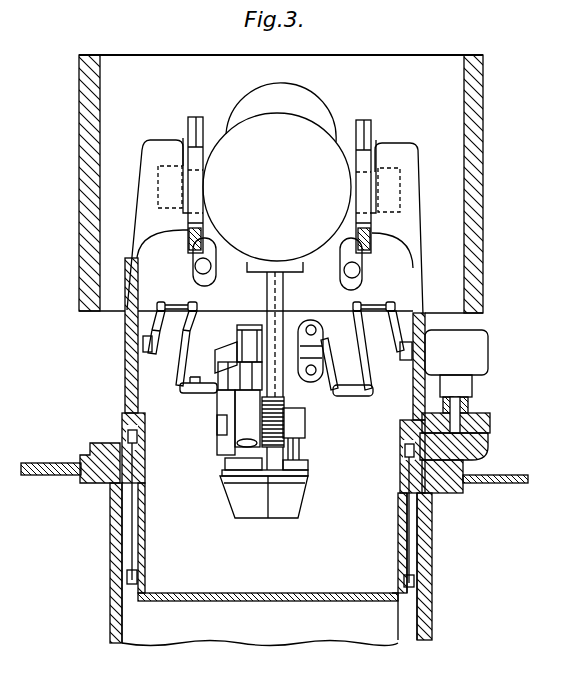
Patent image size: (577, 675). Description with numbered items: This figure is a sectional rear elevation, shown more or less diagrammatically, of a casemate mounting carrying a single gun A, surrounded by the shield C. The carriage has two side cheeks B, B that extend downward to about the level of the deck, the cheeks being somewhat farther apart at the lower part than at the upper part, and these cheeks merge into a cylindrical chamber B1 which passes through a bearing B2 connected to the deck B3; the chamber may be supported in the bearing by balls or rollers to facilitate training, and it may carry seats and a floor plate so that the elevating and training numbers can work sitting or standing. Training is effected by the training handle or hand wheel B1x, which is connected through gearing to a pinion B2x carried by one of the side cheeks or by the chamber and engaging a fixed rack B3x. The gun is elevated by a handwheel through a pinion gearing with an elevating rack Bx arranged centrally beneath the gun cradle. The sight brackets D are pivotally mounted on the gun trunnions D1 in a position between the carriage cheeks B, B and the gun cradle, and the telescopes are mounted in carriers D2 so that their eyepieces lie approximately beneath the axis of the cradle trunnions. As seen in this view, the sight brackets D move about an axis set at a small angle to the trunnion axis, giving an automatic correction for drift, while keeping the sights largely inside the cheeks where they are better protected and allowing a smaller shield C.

The gun A is at (277, 177).
The side cheeks of the carriage B is at (424, 314).
The cylindrical chamber B1 is at (264, 519).
The bearing B2 is at (110, 532).
The deck B3 is at (68, 453).
The elevating rack Bx is at (284, 271).
The training handle or hand wheel B1x is at (377, 310).
The pinion B2x is at (488, 436).
The fixed rack B3x is at (488, 410).
The shield C is at (472, 160).
The sight brackets D is at (193, 142).
The gun trunnions D1 is at (158, 172).
The carriers D2 is at (192, 240).